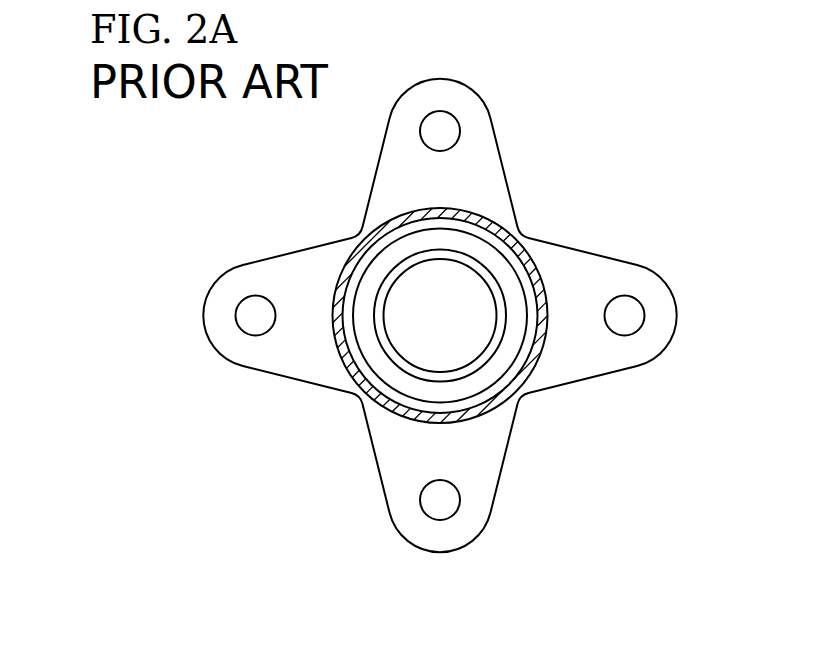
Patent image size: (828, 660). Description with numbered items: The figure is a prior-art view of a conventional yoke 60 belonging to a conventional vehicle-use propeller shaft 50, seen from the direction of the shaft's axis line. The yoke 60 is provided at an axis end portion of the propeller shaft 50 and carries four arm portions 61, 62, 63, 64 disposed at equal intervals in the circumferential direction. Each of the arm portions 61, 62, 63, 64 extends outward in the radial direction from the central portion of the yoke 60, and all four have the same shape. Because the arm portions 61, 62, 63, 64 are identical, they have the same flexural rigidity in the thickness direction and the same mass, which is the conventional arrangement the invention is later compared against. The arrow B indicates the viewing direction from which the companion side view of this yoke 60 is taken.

The yoke 60 is at (439, 307).
The propeller shaft 50 is at (552, 157).
The arm portion 61 is at (396, 139).
The arm portion 62 is at (292, 267).
The arm portion 63 is at (482, 485).
The arm portion 64 is at (602, 272).
The arrow B is at (175, 321).